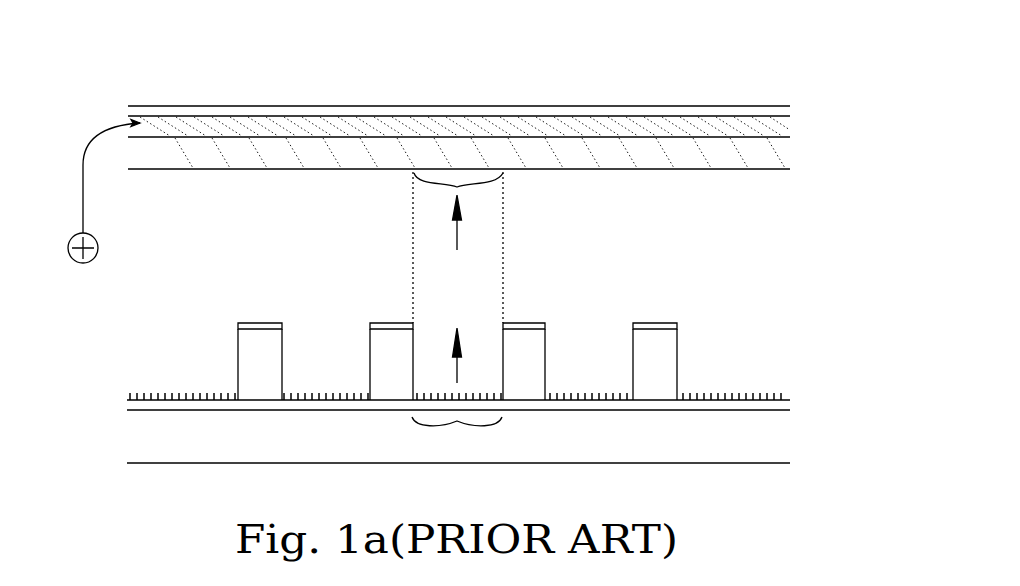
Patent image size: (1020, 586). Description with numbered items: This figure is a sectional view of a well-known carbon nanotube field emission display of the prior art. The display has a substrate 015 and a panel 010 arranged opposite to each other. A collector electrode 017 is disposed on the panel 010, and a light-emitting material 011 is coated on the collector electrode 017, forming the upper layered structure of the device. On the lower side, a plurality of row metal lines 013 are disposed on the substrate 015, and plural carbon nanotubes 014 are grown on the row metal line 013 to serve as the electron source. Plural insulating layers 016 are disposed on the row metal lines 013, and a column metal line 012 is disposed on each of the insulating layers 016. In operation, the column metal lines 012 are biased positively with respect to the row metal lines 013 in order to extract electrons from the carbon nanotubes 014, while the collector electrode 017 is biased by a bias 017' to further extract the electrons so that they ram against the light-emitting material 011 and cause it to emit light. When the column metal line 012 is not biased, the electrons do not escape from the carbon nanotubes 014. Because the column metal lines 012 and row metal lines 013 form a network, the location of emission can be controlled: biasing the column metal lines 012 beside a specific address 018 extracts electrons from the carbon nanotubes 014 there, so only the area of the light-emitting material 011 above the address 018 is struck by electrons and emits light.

The panel 010 is at (242, 104).
The light-emitting material 011 is at (753, 159).
The column metal line 012 is at (655, 323).
The row metal line 013 is at (777, 406).
The carbon nanotubes 014 is at (706, 400).
The substrate 015 is at (168, 435).
The insulating layer 016 is at (258, 358).
The collector electrode 017 is at (442, 84).
The bias 017' is at (100, 212).
The address 018 is at (457, 319).